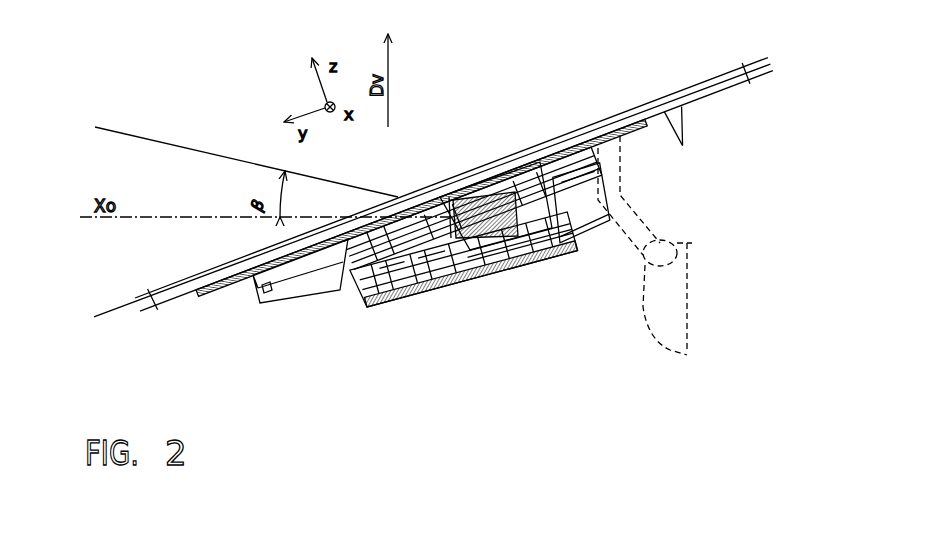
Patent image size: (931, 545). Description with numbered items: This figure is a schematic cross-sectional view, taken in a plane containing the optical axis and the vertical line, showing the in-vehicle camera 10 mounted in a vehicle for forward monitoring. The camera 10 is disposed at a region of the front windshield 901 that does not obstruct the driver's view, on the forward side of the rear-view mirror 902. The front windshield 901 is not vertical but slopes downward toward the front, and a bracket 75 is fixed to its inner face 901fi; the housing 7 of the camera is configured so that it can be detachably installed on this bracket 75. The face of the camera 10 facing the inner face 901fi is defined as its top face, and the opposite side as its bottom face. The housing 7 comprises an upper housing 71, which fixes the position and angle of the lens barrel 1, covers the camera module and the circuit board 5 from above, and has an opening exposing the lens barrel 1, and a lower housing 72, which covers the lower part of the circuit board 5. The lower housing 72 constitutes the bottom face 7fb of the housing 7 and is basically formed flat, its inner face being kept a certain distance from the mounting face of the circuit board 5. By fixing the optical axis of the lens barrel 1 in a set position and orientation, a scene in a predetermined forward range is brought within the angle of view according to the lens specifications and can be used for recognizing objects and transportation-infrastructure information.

The lens barrel 1 is at (513, 193).
The circuit board 5 is at (487, 287).
The housing 7 is at (461, 328).
The upper housing 71 is at (353, 291).
The lower housing 72 is at (422, 300).
The bottom face 7fb is at (458, 324).
The bracket 75 is at (253, 300).
The in-vehicle camera 10 is at (547, 280).
The front windshield 901 is at (613, 125).
The inner face 901fi is at (686, 121).
The rear-view mirror 902 is at (680, 297).